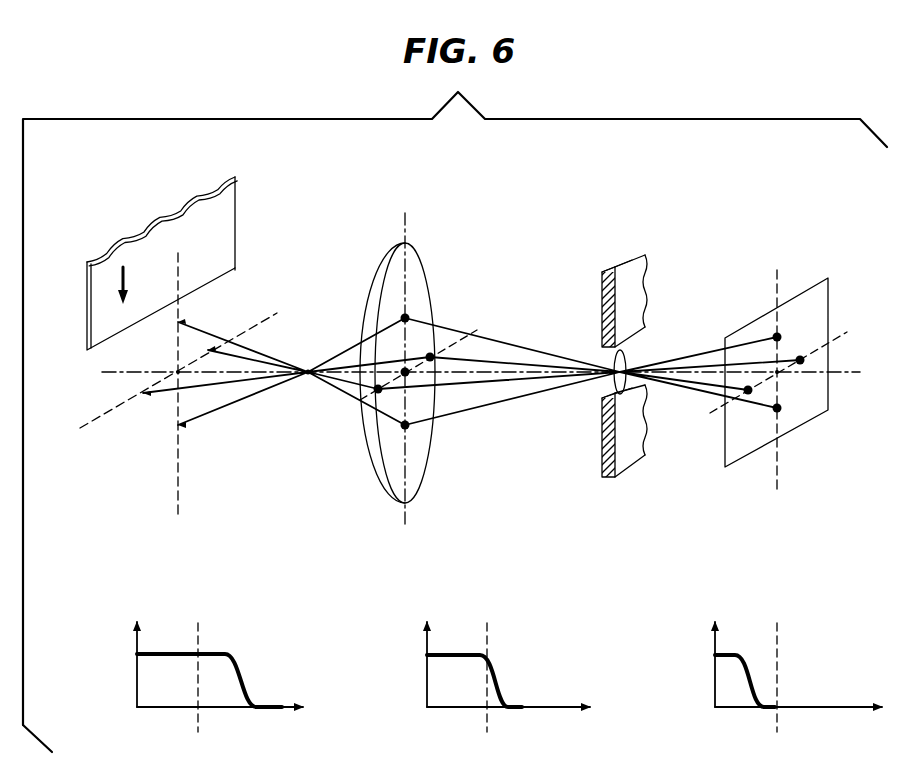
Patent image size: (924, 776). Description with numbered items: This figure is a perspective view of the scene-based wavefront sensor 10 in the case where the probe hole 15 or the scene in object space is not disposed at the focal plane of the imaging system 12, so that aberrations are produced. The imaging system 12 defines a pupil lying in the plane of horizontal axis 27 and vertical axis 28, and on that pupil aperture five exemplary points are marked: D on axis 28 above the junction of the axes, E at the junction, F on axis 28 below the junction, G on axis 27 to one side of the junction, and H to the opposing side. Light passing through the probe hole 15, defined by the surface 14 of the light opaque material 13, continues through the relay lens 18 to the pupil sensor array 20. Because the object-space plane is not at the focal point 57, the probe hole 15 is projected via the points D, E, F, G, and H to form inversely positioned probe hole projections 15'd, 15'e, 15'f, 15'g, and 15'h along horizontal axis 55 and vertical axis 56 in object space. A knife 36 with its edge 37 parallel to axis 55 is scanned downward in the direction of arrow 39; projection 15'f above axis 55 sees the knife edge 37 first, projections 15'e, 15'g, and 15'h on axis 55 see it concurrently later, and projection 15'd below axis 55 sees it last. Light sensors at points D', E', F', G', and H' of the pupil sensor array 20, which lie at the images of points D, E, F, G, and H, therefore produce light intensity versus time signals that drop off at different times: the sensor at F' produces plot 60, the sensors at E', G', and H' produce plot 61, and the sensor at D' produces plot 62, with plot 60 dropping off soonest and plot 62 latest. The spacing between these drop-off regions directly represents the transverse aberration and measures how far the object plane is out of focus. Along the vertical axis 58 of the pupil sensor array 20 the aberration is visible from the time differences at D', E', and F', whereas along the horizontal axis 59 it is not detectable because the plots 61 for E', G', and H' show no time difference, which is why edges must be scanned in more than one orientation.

The scene-based wavefront sensor 10 is at (546, 166).
The imaging system 12 is at (414, 260).
The light opaque material 13 is at (593, 353).
The surface 14 is at (601, 298).
The probe hole 15 is at (593, 434).
The relay lens 18 is at (626, 354).
The pupil sensor array 20 is at (806, 292).
The horizontal axis 27 is at (360, 405).
The vertical axis 28 is at (406, 516).
The knife 36 is at (237, 185).
The knife edge 37 is at (237, 270).
The arrow 39 is at (128, 272).
The horizontal axis 55 is at (95, 422).
The vertical axis 56 is at (177, 503).
The focal point 57 is at (306, 377).
The vertical axis 58 is at (776, 478).
The horizontal axis 59 is at (708, 414).
The plot 60 is at (746, 660).
The plot 61 is at (492, 655).
The plot 62 is at (206, 652).
The probe hole projection 15'd is at (149, 440).
The probe hole projection 15'e is at (149, 354).
The probe hole projection 15'f is at (218, 310).
The probe hole projection 15'g is at (264, 339).
The probe hole projection 15'h is at (101, 392).
The pupil point D is at (427, 300).
The pupil point E is at (371, 342).
The pupil point F is at (427, 449).
The pupil point G is at (349, 400).
The pupil point H is at (450, 332).
The pupil sensor array point D' is at (798, 429).
The pupil sensor array point E' is at (799, 389).
The pupil sensor array point F' is at (797, 320).
The pupil sensor array point G' is at (834, 358).
The pupil sensor array point H' is at (709, 403).